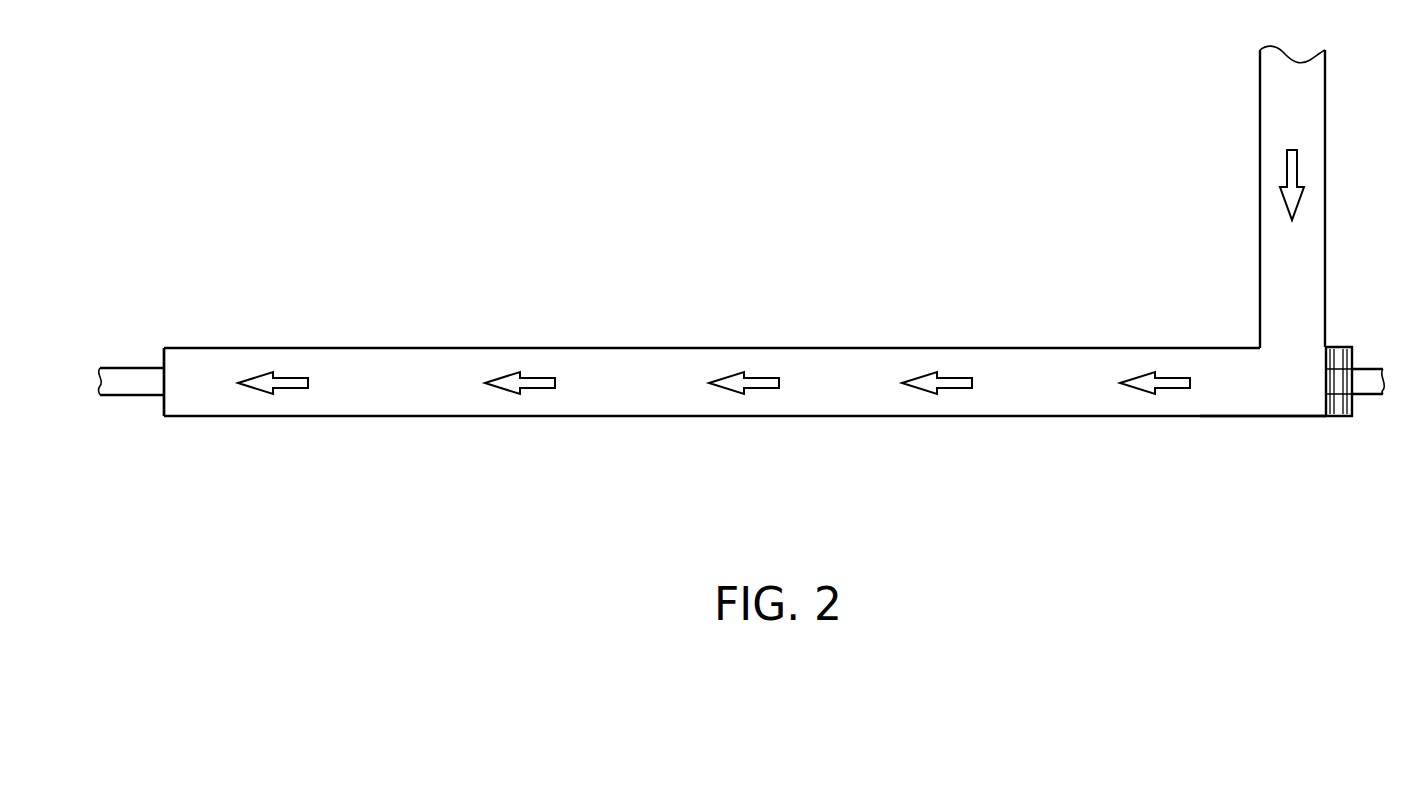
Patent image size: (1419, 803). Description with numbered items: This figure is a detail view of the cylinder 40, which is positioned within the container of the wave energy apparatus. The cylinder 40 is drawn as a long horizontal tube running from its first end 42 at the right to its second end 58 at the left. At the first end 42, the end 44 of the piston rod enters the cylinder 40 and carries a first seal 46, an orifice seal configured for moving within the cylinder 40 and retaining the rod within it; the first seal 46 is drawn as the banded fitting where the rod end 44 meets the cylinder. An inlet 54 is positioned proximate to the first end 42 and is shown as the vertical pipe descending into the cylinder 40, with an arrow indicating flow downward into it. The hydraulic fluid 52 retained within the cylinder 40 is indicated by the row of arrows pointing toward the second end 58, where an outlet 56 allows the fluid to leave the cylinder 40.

The cylinder 40 is at (592, 365).
The first end 42 is at (1278, 417).
The end 44 is at (1372, 387).
The first seal 46 is at (1327, 372).
The hydraulic fluid 52 is at (1130, 388).
The inlet 54 is at (1260, 265).
The outlet 56 is at (162, 382).
The second end 58 is at (190, 348).